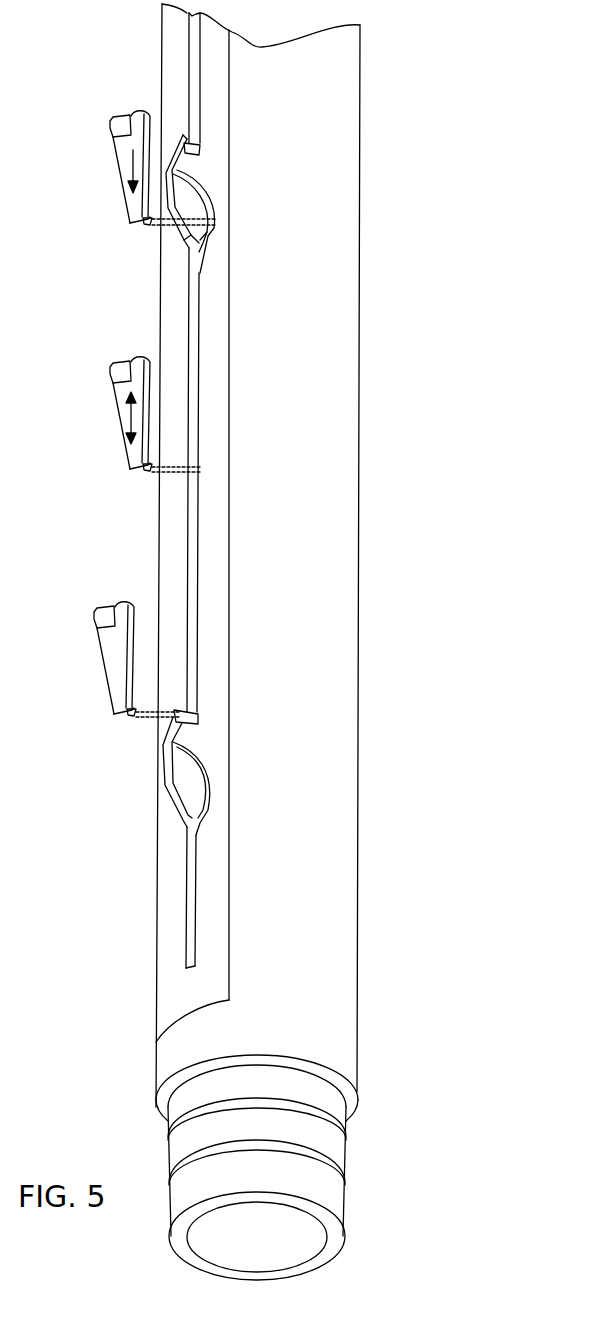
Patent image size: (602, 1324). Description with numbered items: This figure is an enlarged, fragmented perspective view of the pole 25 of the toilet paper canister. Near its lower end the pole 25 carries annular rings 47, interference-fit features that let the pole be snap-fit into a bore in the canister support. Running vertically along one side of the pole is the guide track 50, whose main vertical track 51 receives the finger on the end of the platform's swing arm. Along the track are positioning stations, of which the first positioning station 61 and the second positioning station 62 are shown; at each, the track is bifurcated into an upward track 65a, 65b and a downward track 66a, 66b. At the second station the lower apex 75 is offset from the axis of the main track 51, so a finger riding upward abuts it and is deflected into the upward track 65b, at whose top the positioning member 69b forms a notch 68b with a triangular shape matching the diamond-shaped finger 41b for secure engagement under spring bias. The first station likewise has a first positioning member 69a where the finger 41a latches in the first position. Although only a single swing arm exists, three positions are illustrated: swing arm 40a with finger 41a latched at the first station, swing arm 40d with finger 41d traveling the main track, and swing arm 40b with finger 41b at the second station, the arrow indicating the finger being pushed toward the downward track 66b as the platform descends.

The pole 25 is at (323, 473).
The annular rings 47 is at (168, 1180).
The guide track 50 is at (200, 337).
The main vertical track 51 is at (202, 95).
The second positioning station 62 is at (210, 181).
The first positioning station 61 is at (198, 752).
The notch 68b is at (185, 140).
The positioning member 69b is at (187, 143).
The upward track 65b is at (174, 197).
The downward track 66b is at (217, 202).
The lower apex 75 is at (187, 242).
The first positioning member 69a is at (177, 712).
The upward track 65a is at (172, 768).
The downward track 66a is at (215, 780).
The swing arm 40b is at (142, 186).
The finger 41b is at (150, 224).
The swing arm 40d is at (129, 435).
The finger 41d is at (149, 473).
The swing arm 40a is at (113, 677).
The finger 41a is at (133, 718).